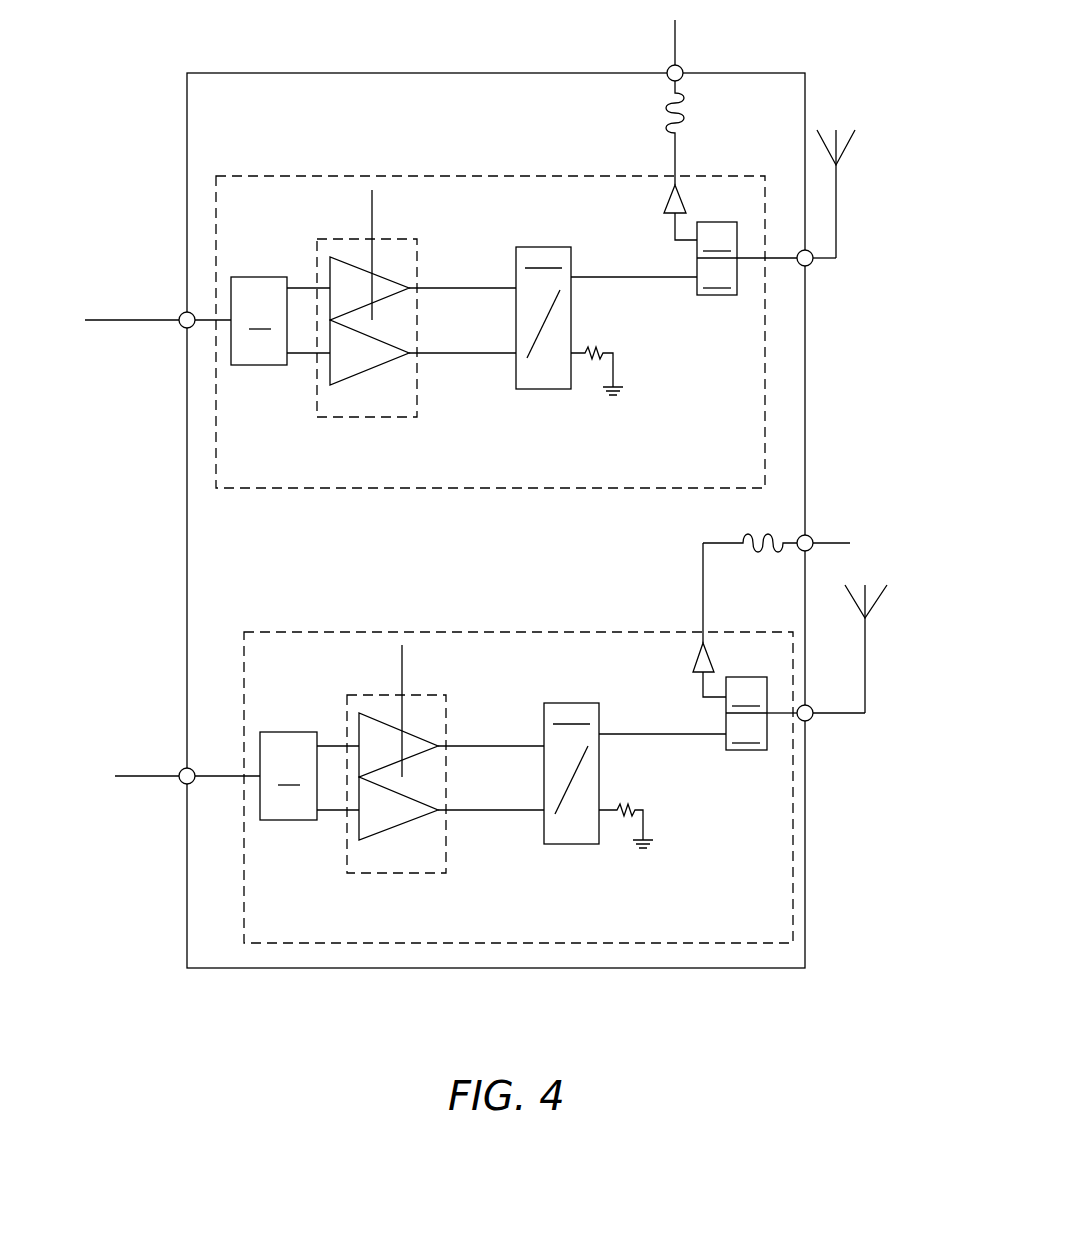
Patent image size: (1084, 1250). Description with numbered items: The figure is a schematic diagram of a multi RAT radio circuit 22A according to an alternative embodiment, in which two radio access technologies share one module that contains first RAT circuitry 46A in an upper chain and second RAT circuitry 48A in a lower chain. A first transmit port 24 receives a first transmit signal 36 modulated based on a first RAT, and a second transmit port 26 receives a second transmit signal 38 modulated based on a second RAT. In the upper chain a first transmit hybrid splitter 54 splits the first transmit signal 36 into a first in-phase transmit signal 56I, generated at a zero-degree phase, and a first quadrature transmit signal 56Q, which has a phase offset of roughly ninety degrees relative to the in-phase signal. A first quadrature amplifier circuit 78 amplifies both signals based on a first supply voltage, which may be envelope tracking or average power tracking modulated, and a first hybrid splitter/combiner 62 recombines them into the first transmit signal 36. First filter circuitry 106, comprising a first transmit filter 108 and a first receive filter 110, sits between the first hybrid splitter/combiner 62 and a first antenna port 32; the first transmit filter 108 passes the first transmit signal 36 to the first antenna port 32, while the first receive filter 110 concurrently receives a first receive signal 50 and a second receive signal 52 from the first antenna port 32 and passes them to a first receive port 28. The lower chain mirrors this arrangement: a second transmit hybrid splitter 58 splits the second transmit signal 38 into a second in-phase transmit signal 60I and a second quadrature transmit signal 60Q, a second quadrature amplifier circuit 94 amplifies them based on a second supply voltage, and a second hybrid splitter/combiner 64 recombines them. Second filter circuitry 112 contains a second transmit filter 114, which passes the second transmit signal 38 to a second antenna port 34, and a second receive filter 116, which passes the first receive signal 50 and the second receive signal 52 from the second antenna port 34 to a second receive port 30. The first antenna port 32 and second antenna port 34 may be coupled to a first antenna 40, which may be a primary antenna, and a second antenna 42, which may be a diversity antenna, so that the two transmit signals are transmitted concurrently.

The multi RAT radio circuit 22A is at (785, 104).
The first transmit port 24 is at (180, 313).
The second transmit port 26 is at (180, 770).
The first receive port 28 is at (681, 66).
The second receive port 30 is at (811, 536).
The first antenna port 32 is at (811, 265).
The second antenna port 34 is at (811, 720).
The first transmit signal 36 is at (117, 326).
The second transmit signal 38 is at (146, 782).
The first antenna 40 is at (850, 138).
The second antenna 42 is at (882, 598).
The first RAT circuitry 46A is at (268, 479).
The second RAT circuitry 48A is at (297, 934).
The first receive signal 50 is at (684, 116).
The second receive signal 52 is at (669, 105).
The first transmit hybrid splitter 54 is at (259, 321).
The first in-phase transmit signal 56I is at (300, 283).
The first quadrature transmit signal 56Q is at (300, 359).
The second transmit hybrid splitter 58 is at (288, 776).
The second in-phase transmit signal 60I is at (330, 816).
The second quadrature transmit signal 60Q is at (330, 741).
The first hybrid splitter/combiner 62 is at (550, 247).
The second hybrid splitter/combiner 64 is at (580, 703).
The first quadrature amplifier circuit 78 is at (378, 418).
The second quadrature amplifier circuit 94 is at (407, 874).
The first filter circuitry 106 is at (712, 296).
The first transmit filter 108 is at (750, 273).
The first receive filter 110 is at (700, 218).
The second filter circuitry 112 is at (742, 751).
The second transmit filter 114 is at (764, 728).
The second receive filter 116 is at (729, 625).